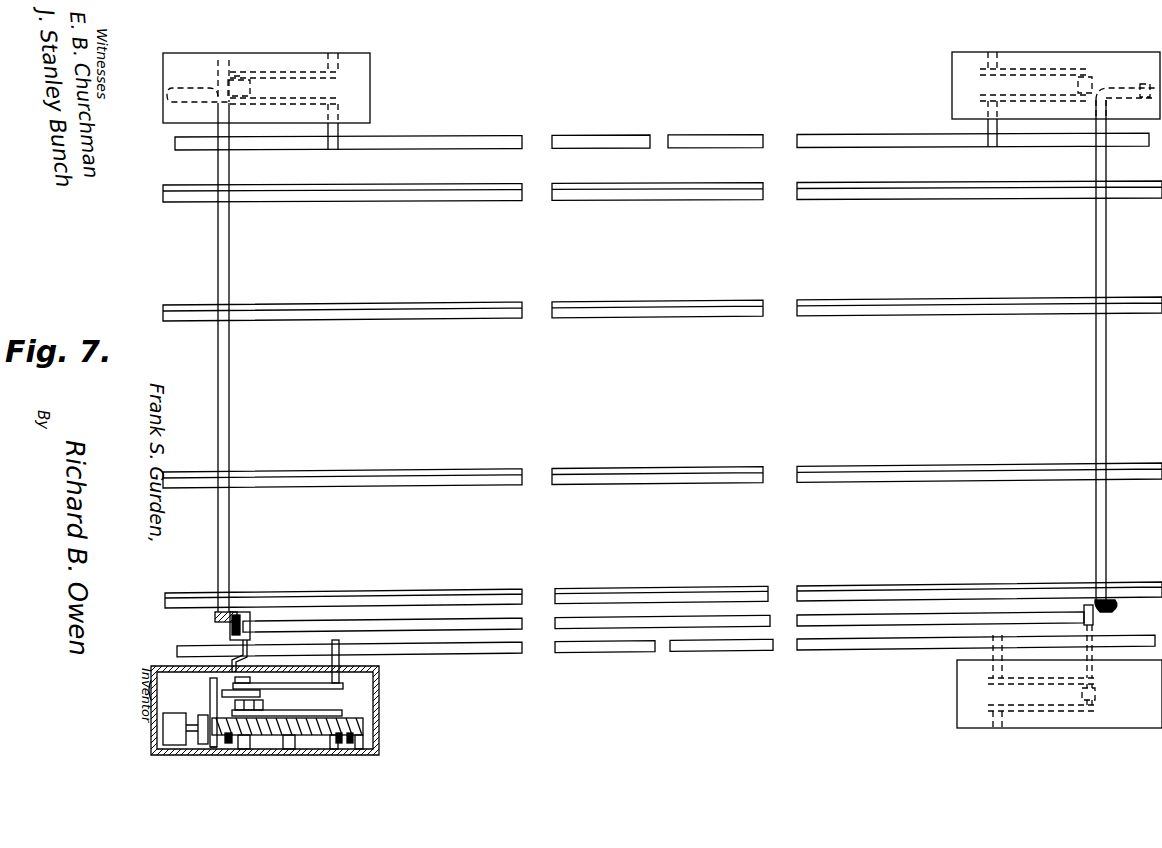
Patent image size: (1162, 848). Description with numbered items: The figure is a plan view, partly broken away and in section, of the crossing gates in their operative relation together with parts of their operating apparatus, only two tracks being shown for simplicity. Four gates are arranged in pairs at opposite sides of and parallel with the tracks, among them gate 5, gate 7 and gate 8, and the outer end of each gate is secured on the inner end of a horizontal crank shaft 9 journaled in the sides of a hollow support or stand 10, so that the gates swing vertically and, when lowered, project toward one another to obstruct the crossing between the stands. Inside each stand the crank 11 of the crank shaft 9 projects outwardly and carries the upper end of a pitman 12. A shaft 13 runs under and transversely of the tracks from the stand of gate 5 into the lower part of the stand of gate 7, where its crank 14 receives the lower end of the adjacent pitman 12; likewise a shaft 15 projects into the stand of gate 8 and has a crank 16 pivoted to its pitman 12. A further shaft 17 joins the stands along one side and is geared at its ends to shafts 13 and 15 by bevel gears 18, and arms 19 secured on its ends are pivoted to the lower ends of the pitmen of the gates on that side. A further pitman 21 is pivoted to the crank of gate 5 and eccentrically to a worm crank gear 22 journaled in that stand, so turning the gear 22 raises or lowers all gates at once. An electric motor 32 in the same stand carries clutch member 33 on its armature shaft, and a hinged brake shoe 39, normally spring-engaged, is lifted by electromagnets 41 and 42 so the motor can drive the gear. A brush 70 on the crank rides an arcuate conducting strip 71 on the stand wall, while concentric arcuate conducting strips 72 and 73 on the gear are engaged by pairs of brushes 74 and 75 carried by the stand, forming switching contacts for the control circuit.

The gate 5 is at (470, 650).
The gate 7 is at (432, 140).
The gate 8 is at (795, 140).
The crank shaft 9 is at (338, 130).
The hollow support or stand 10 is at (370, 90).
The crank 11 is at (292, 106).
The pitman 12 is at (210, 86).
The shaft 13 is at (229, 410).
The crank 14 is at (190, 110).
The shaft 15 is at (1096, 385).
The crank 16 is at (1125, 126).
The shaft 17 is at (618, 636).
The bevel gears 18 is at (233, 611).
The arm 19 is at (256, 624).
The pitman 21 is at (414, 487).
The worm crank gear 22 is at (358, 718).
The electric motor 32 is at (173, 713).
The clutch member 33 is at (202, 715).
The hinged brake shoe 39 is at (210, 748).
The electromagnet 41 is at (206, 693).
The electromagnet 42 is at (212, 696).
The brush 70 is at (250, 688).
The arcuate conducting strip 71 is at (309, 683).
The arcuate conducting strip 72 is at (360, 742).
The arcuate conducting strip 73 is at (232, 749).
The brushes 74 is at (350, 753).
The brushes 75 is at (262, 752).